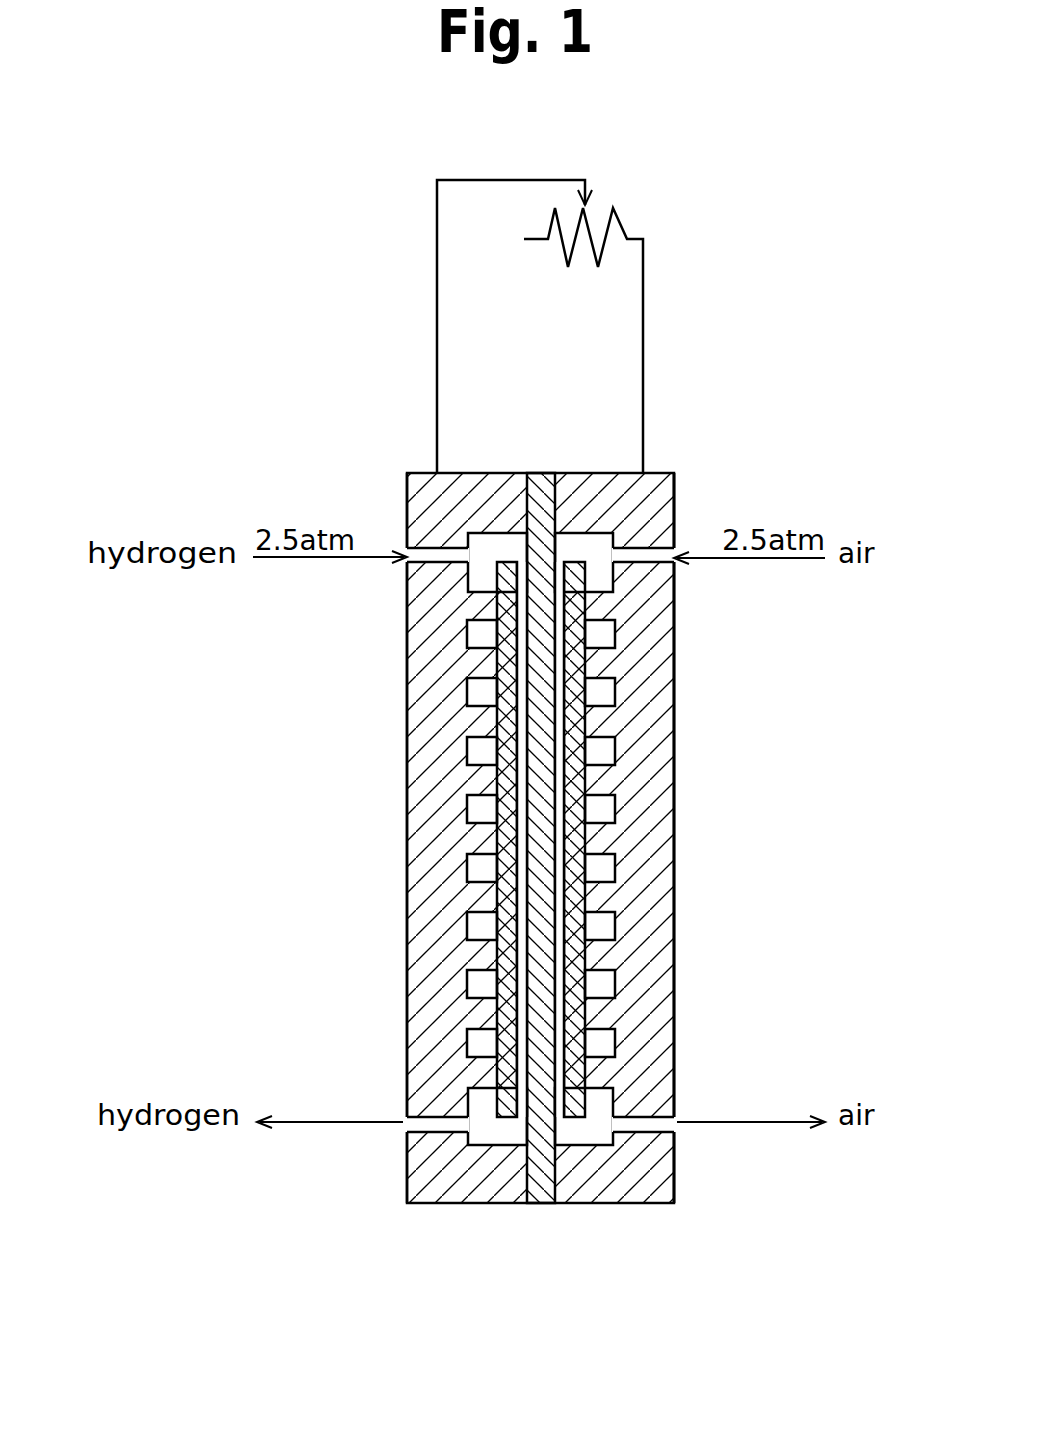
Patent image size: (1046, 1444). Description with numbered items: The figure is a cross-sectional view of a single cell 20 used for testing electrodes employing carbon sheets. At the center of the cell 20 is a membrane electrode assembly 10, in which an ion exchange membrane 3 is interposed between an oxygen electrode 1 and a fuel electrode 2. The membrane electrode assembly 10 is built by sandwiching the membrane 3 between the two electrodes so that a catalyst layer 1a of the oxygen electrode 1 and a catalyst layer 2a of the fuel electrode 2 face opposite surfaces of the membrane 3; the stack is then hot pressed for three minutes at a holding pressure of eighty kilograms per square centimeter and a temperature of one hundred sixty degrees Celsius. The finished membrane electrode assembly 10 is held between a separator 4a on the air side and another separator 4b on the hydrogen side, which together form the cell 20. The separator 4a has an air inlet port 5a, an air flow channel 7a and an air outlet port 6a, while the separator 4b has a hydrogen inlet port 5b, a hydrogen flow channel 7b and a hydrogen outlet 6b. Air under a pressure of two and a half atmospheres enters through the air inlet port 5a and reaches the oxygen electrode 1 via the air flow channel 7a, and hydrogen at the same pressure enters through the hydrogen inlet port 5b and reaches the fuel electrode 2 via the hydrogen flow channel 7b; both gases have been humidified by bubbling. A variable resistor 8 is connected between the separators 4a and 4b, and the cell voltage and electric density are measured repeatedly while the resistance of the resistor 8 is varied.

The oxygen electrode 1 is at (576, 1110).
The catalyst layer of the oxygen electrode 1a is at (558, 1114).
The fuel electrode 2 is at (505, 1112).
The catalyst layer of the fuel electrode 2a is at (521, 1114).
The ion exchange membrane 3 is at (537, 1190).
The separator 4a is at (655, 498).
The separator 4b is at (430, 510).
The air inlet port 5a is at (645, 557).
The hydrogen inlet port 5b is at (430, 565).
The air outlet port 6a is at (660, 1128).
The hydrogen outlet 6b is at (417, 1123).
The air flow channel 7a is at (605, 753).
The hydrogen flow channel 7b is at (477, 752).
The variable resistor 8 is at (588, 222).
The membrane electrode assembly 10 is at (545, 470).
The single cell 20 is at (678, 913).